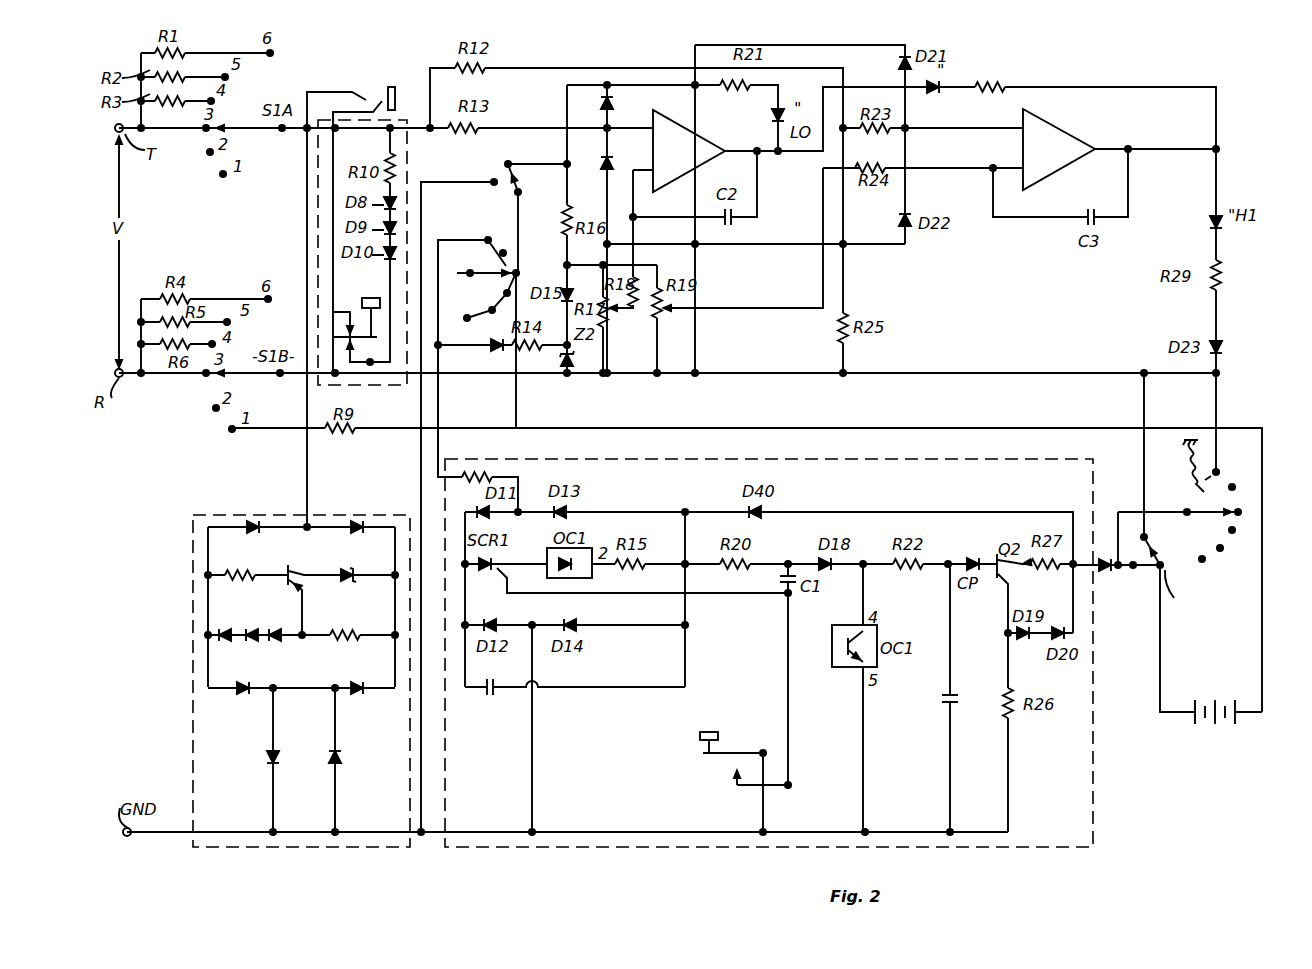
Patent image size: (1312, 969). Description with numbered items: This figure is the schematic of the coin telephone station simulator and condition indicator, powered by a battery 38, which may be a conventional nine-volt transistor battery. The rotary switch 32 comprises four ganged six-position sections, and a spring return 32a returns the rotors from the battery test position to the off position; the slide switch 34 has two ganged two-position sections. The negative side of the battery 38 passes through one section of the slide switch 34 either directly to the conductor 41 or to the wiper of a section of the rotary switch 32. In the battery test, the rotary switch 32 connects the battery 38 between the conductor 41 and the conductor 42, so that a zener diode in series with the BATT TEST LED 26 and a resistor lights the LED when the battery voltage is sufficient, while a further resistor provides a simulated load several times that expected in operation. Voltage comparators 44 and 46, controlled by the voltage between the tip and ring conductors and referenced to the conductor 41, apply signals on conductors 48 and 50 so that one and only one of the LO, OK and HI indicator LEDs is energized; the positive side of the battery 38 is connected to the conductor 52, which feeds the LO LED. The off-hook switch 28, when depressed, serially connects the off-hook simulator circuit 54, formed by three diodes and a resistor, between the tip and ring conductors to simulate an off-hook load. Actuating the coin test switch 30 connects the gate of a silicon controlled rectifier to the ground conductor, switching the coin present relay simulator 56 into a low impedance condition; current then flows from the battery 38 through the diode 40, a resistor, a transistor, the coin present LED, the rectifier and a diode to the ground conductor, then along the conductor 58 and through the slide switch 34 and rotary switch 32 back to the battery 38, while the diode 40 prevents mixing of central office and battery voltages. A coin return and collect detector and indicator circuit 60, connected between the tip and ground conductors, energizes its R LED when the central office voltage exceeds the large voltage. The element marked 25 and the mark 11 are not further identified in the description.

The relay U1 25 is at (355, 51).
The off-hook simulator circuit 54 is at (405, 118).
The off-hook switch 28 is at (340, 300).
The conductor 52 is at (611, 82).
The voltage comparator 44 is at (686, 124).
The conductor 48 is at (749, 148).
The voltage comparator 46 is at (1060, 126).
The conductor 50 is at (1170, 148).
The conductor 41 is at (510, 378).
The conductor 58 is at (462, 182).
The slide switch 34 is at (540, 200).
The rotary switch 32 is at (275, 186).
The spring return 32a is at (1171, 448).
The conductor 42 is at (437, 402).
The BATT TEST LED 26 is at (488, 338).
The diode 11 is at (973, 552).
The coin present relay simulator 56 is at (1095, 814).
The coin test switch 30 is at (748, 740).
The diode 40 is at (1108, 570).
The battery 38 is at (1226, 732).
The coin return and collect detector and indicator circuit 60 is at (193, 542).